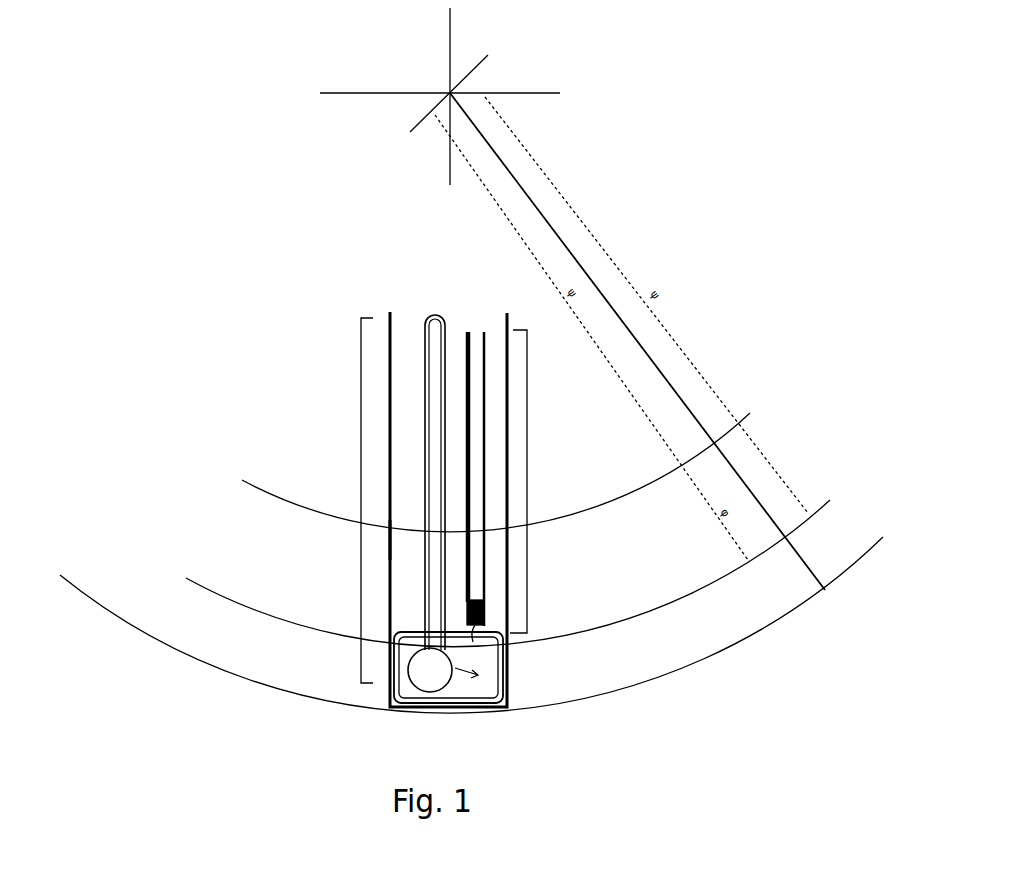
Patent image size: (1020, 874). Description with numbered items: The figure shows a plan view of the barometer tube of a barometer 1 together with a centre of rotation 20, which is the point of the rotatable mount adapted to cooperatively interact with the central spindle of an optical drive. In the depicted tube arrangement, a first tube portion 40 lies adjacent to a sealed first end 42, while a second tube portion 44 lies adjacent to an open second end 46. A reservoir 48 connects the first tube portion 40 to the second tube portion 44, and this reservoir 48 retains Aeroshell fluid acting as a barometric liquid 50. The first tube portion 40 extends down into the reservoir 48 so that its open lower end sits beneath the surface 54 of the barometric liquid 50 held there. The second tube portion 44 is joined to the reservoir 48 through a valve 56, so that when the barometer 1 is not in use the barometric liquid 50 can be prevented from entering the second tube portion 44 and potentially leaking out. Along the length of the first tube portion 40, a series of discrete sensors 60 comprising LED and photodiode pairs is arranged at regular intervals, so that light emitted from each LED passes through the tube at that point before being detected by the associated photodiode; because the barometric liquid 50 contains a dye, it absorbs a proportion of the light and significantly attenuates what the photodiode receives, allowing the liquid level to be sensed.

The barometer 1 is at (205, 208).
The centre of rotation 20 is at (447, 88).
The first tube portion 40 is at (361, 427).
The sealed first end 42 is at (434, 310).
The second tube portion 44 is at (528, 483).
The open second end 46 is at (470, 330).
The reservoir 48 is at (505, 688).
The barometric liquid 50 is at (408, 670).
The surface of the barometric fluid 54 is at (500, 624).
The valve 56 is at (505, 592).
The series of discrete sensors 60 is at (383, 542).